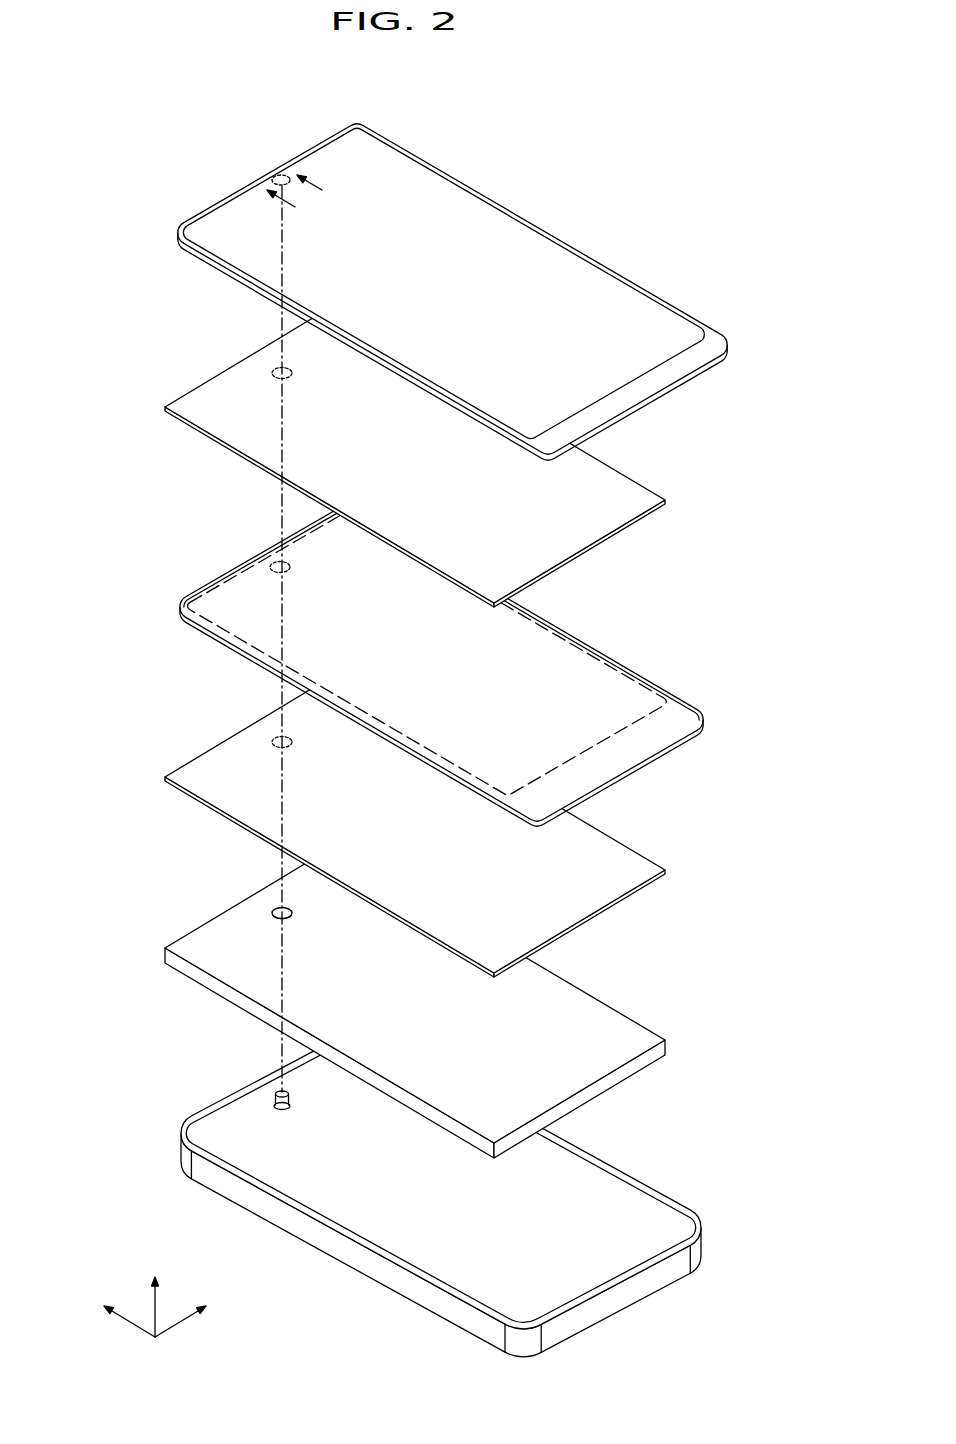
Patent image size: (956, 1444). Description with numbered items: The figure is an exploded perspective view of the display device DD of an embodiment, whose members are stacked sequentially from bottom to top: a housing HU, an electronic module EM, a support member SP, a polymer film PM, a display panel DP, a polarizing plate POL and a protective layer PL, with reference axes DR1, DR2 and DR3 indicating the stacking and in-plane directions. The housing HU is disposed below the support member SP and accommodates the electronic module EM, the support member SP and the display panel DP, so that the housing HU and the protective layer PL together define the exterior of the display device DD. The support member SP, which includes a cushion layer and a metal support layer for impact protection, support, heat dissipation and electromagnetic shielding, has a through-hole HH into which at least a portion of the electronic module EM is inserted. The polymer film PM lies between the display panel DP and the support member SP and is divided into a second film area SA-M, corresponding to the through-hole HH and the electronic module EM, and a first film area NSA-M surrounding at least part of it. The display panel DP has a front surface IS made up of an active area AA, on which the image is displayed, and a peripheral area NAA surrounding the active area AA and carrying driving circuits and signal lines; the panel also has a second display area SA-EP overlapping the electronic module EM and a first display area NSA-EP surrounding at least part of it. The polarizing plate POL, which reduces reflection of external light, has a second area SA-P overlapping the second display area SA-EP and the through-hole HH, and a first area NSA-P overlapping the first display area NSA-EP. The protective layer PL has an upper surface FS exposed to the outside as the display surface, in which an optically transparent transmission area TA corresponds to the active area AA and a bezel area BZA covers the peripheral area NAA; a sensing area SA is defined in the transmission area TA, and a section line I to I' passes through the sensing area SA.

The display device DD is at (402, 724).
The protective layer PL is at (408, 275).
The upper surface FS is at (439, 275).
The transmission area TA is at (231, 224).
The bezel area BZA is at (239, 191).
The sensing area SA is at (293, 157).
The section line point I is at (286, 207).
The section line point I' is at (320, 190).
The polarizing plate POL is at (371, 449).
The second area SA-P is at (281, 367).
The first area NSA-P is at (212, 394).
The display panel DP is at (396, 637).
The front surface IS is at (394, 621).
The active area AA is at (232, 471).
The peripheral area NAA is at (193, 585).
The second display area SA-EP is at (279, 561).
The first display area NSA-EP is at (230, 594).
The polymer film PM is at (377, 819).
The second film area SA-M is at (281, 736).
The first film area NSA-M is at (212, 764).
The through-hole HH is at (280, 908).
The support member SP is at (378, 994).
The electronic module EM is at (279, 1090).
The housing HU is at (185, 1148).
The first direction DR1 is at (202, 1312).
The second direction DR2 is at (110, 1312).
The third direction DR3 is at (155, 1293).